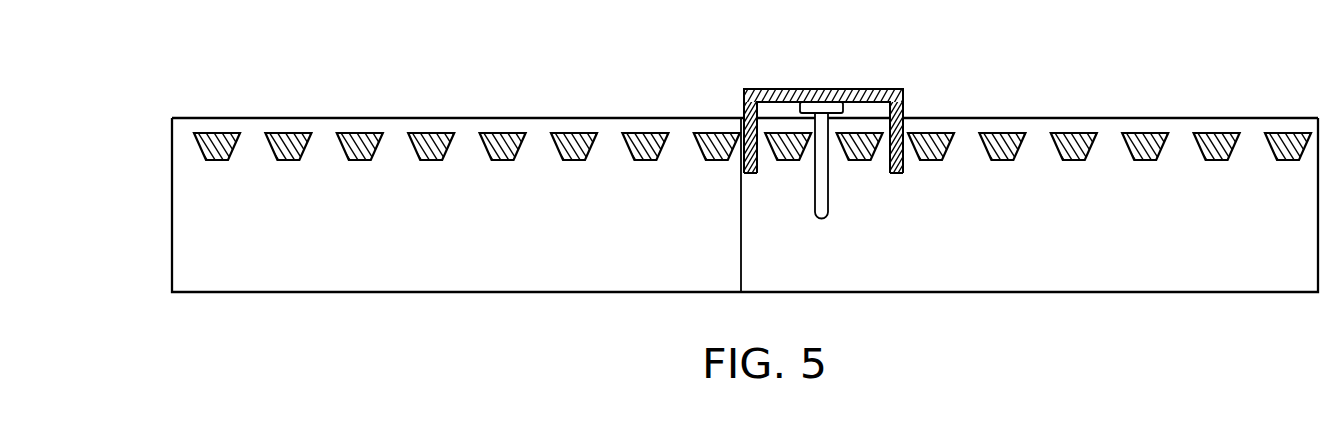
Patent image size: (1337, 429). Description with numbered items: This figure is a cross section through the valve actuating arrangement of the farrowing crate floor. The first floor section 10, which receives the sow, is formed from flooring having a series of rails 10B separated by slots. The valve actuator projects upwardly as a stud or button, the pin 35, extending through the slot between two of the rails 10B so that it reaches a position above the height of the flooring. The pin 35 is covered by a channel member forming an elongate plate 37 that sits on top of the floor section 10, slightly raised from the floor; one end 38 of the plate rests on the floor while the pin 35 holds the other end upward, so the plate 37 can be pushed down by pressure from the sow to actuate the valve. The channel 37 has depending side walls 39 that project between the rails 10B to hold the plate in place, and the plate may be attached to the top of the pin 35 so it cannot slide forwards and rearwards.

The first floor section 10 is at (1093, 100).
The rails 10B is at (645, 133).
The valve actuator pin 35 is at (816, 104).
The elongate plate 37 is at (857, 83).
The end of plate 38 is at (504, 0).
The depending side walls 39 is at (758, 174).